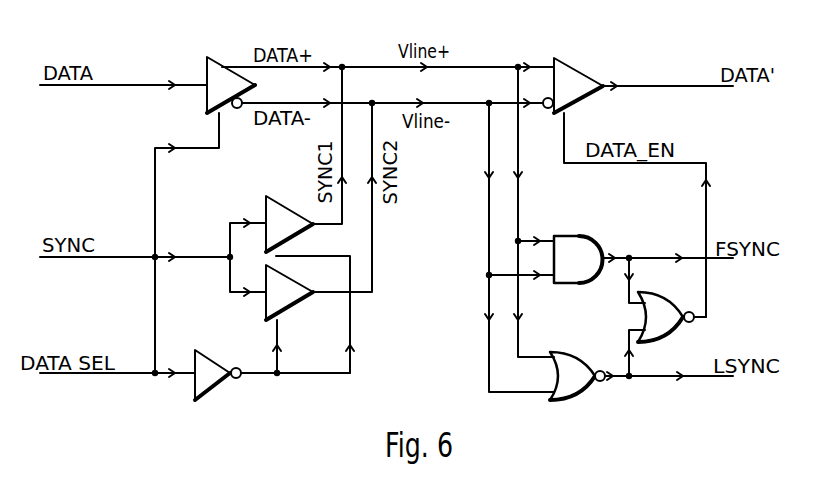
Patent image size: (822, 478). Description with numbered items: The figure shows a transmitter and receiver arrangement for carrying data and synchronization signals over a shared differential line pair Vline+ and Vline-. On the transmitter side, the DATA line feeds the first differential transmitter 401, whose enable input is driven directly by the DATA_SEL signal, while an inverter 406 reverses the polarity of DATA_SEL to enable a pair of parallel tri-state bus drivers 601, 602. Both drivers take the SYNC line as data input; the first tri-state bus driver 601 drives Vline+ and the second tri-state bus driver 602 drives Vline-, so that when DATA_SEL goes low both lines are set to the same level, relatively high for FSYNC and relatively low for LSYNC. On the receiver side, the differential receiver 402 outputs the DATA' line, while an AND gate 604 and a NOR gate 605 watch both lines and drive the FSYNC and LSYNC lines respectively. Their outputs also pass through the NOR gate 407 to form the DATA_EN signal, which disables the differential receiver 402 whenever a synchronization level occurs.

The first differential transmitter 401 is at (215, 57).
The differential receiver 402 is at (566, 58).
The first tri-state bus driver 601 is at (270, 196).
The second tri-state bus driver 602 is at (290, 308).
The inverter 406 is at (205, 350).
The AND gate 604 is at (565, 236).
The NOR gate 605 is at (562, 352).
The NOR gate 407 is at (641, 296).